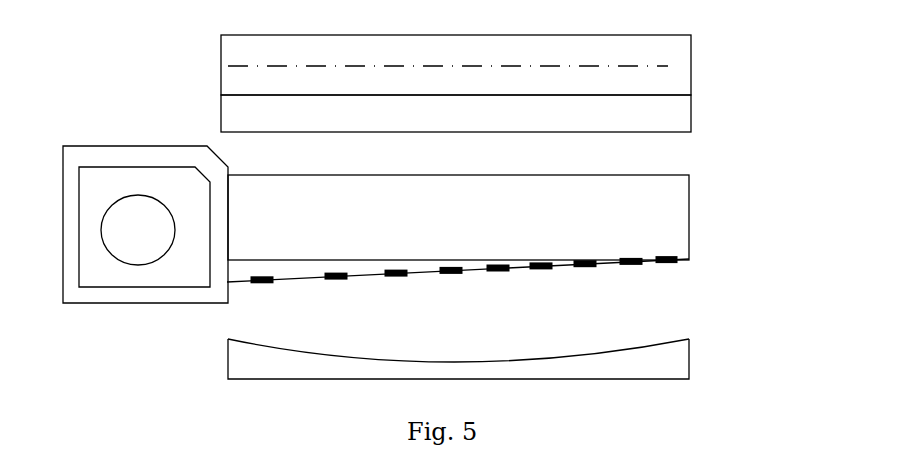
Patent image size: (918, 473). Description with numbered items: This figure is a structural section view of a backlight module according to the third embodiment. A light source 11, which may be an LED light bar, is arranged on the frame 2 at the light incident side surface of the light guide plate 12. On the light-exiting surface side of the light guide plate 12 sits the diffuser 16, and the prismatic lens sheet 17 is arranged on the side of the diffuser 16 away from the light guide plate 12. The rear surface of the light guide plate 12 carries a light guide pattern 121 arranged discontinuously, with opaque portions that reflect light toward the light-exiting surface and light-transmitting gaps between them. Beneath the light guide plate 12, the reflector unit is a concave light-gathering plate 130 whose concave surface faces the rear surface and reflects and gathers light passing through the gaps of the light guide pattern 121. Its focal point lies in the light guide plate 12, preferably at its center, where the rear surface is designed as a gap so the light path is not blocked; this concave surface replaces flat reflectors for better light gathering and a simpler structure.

The frame 2 is at (108, 152).
The light source 11 is at (137, 223).
The prismatic lens sheet 17 is at (668, 72).
The diffuser 16 is at (668, 122).
The light guide plate 12 is at (670, 212).
The light guide pattern 121 is at (678, 257).
The concave light-gathering plate 130 is at (668, 365).